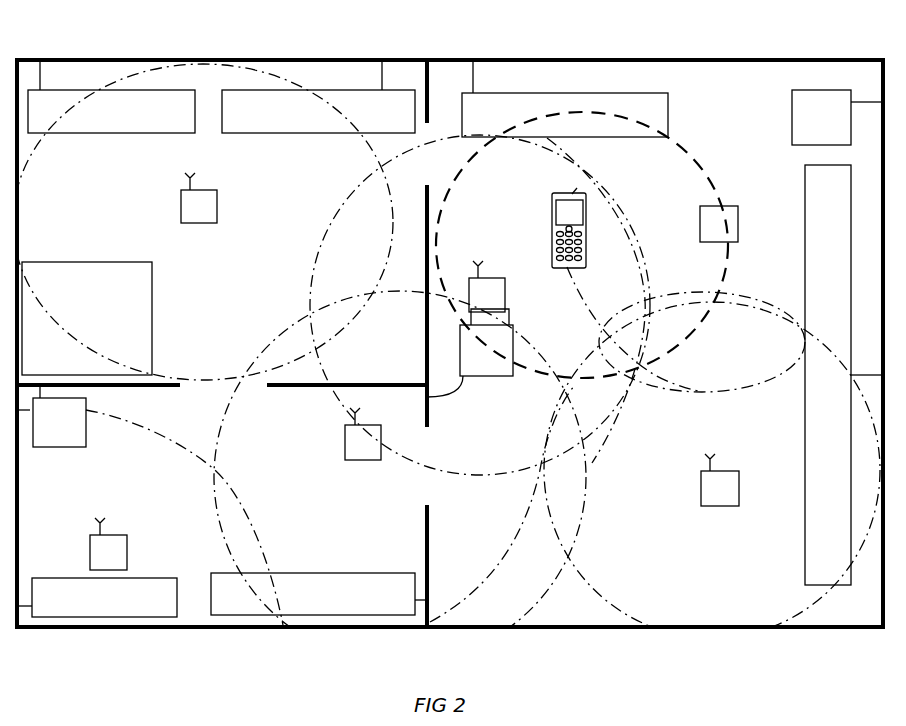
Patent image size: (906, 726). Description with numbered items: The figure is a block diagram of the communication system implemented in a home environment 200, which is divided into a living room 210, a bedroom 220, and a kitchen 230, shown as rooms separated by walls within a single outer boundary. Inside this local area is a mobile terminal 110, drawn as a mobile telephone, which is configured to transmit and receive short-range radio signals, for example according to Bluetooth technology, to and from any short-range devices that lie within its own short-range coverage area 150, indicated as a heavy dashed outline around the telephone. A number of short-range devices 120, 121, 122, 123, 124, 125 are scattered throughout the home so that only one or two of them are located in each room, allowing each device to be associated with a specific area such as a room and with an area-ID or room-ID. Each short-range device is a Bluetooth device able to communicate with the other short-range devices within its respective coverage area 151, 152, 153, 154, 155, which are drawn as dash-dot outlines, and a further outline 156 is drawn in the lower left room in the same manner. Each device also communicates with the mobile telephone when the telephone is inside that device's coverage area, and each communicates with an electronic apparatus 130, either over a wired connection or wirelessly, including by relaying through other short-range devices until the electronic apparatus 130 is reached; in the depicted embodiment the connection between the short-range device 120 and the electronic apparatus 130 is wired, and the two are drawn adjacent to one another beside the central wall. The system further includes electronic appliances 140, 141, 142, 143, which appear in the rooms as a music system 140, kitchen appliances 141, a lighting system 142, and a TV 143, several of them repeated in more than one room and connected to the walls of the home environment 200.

The home environment 200 is at (748, 60).
The living room 210 is at (558, 584).
The bedroom 220 is at (333, 546).
The kitchen 230 is at (276, 226).
The mobile terminal 110 is at (550, 207).
The short-range device 120 is at (487, 286).
The short-range device 121 is at (720, 480).
The short-range device 122 is at (719, 224).
The short-range device 123 is at (363, 434).
The short-range device 124 is at (199, 198).
The short-range device 125 is at (108, 544).
The electronic apparatus 130 is at (470, 353).
The electronic appliance 140 is at (348, 338).
The electronic appliance 141 is at (87, 318).
The electronic appliance 142 is at (450, 340).
The electronic appliance 143 is at (450, 268).
The short-range coverage area 150 is at (688, 158).
The coverage area 151 is at (598, 424).
The coverage area 152 is at (607, 578).
The coverage area 153 is at (775, 382).
The coverage area 154 is at (220, 412).
The coverage area 155 is at (40, 134).
The range of sensor 156 is at (178, 446).